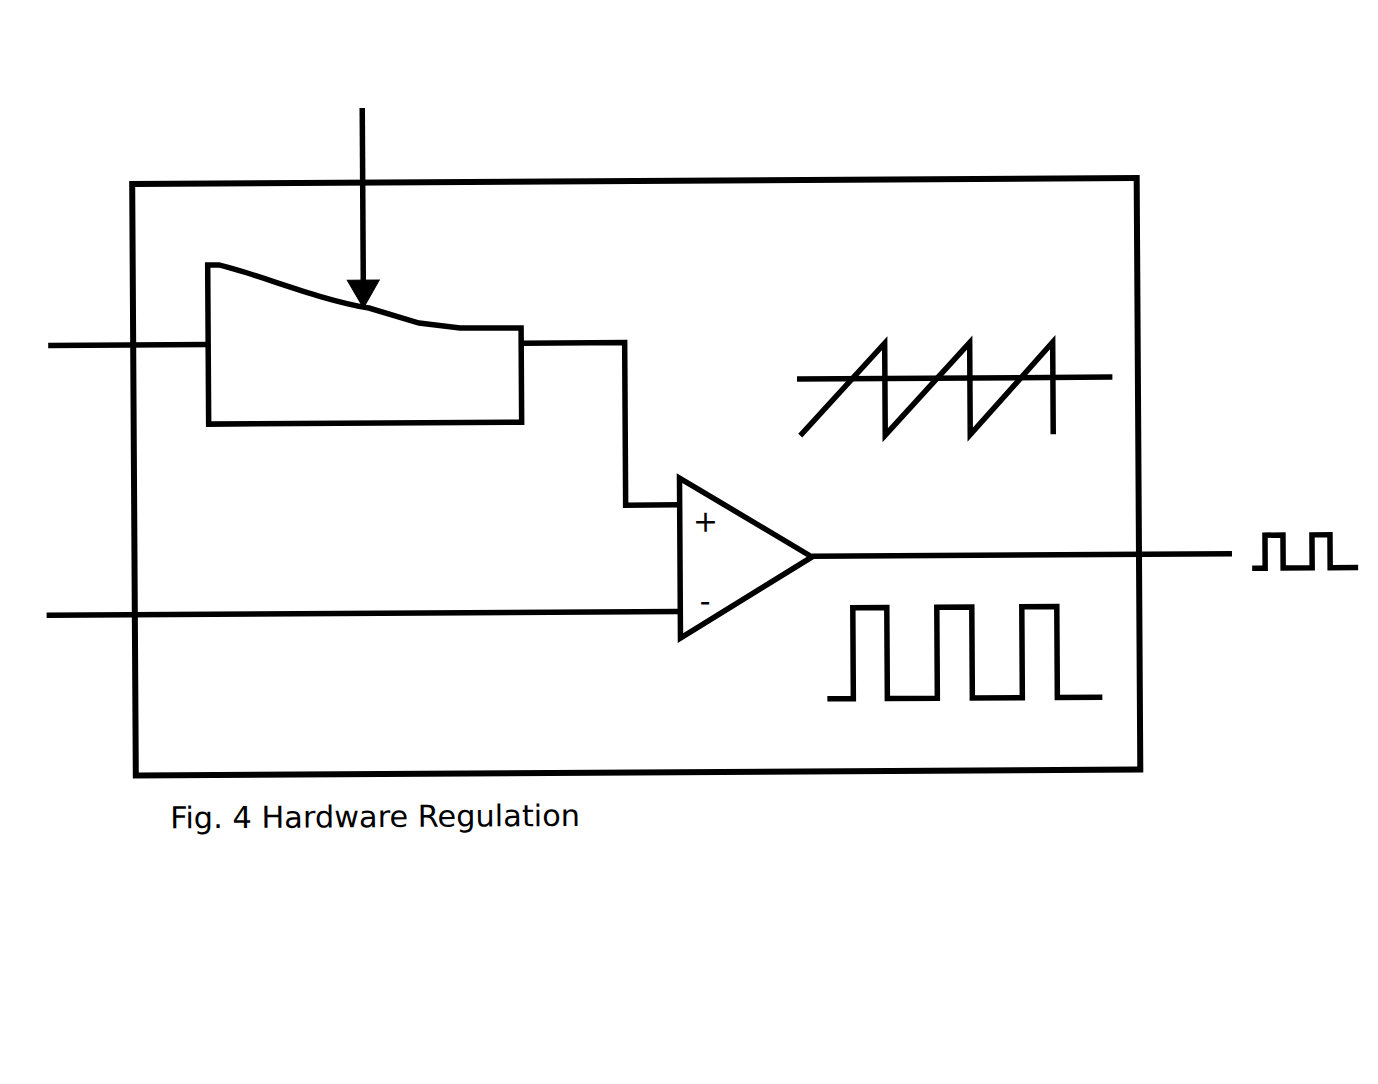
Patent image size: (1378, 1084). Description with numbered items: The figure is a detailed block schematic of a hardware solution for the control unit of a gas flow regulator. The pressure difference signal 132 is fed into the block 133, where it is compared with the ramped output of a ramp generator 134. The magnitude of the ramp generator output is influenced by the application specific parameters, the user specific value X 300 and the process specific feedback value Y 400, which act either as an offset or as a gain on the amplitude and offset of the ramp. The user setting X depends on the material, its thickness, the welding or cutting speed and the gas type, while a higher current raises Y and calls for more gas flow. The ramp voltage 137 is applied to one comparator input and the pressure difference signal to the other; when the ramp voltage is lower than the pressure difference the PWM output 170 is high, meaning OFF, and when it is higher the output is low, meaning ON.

The block 133 is at (636, 477).
The user specific value X 300 is at (330, 187).
The process specific feedback value Y 400 is at (115, 350).
The ramp generator 134 is at (364, 367).
The ramp voltage 137 is at (817, 401).
The ΔP signal 132 is at (354, 615).
The PWM output 170 is at (1085, 538).